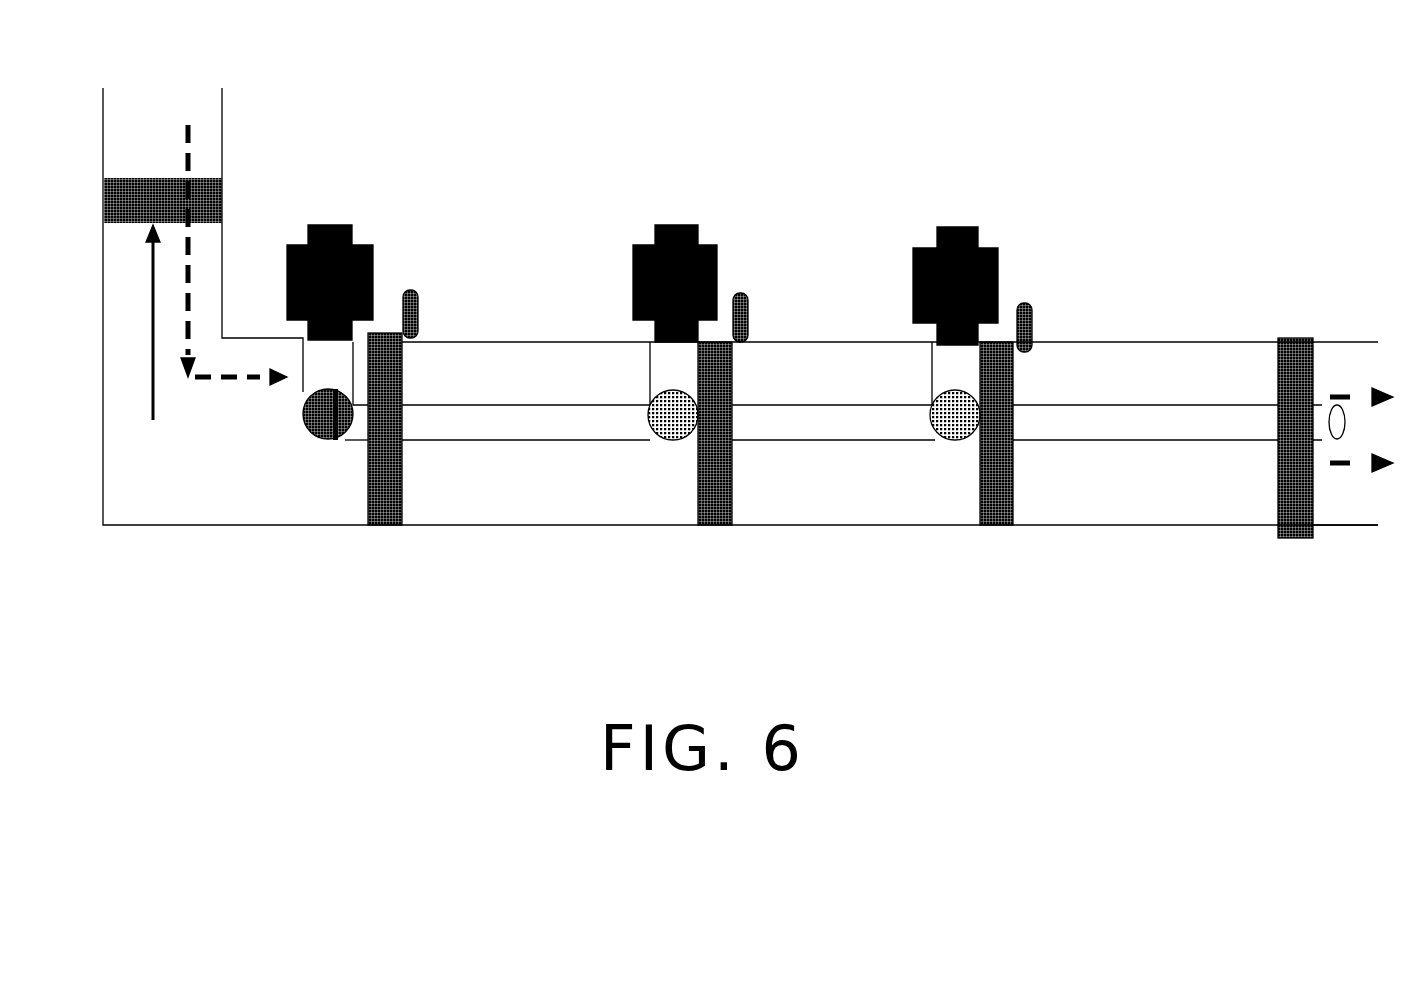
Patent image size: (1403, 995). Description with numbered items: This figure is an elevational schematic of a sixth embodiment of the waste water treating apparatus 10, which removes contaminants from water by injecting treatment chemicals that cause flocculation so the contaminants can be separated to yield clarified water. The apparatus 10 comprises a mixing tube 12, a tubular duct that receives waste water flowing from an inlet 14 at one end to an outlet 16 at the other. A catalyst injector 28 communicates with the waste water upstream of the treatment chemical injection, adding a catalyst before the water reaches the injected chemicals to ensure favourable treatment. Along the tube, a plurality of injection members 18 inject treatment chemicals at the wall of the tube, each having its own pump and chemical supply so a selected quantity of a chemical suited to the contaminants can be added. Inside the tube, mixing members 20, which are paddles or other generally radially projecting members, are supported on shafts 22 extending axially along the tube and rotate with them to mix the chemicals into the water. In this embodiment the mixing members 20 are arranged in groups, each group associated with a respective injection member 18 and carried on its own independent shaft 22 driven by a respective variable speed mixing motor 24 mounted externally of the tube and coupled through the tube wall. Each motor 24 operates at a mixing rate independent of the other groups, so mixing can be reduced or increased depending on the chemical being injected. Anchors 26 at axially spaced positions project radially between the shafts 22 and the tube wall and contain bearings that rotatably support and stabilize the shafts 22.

The waste water treating apparatus 10 is at (1117, 217).
The mixing tube 12 is at (1146, 343).
The inlet 14 is at (235, 497).
The outlet 16 is at (1347, 513).
The injection member 18 is at (418, 312).
The mixing member 20 is at (1127, 493).
The shaft 22 is at (1052, 423).
The mixing motor 24 is at (352, 225).
The anchor 26 is at (383, 527).
The catalyst injector 28 is at (208, 291).